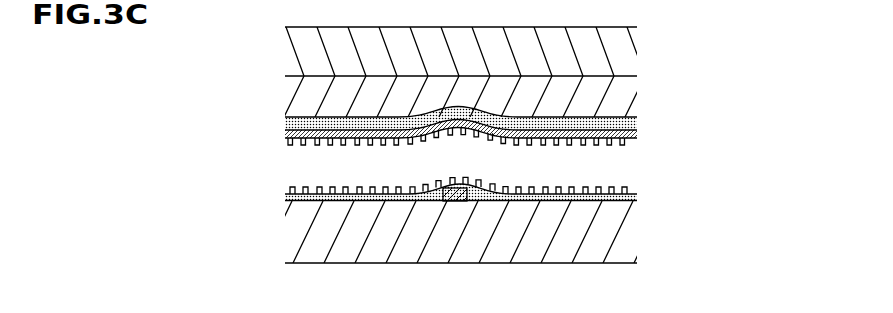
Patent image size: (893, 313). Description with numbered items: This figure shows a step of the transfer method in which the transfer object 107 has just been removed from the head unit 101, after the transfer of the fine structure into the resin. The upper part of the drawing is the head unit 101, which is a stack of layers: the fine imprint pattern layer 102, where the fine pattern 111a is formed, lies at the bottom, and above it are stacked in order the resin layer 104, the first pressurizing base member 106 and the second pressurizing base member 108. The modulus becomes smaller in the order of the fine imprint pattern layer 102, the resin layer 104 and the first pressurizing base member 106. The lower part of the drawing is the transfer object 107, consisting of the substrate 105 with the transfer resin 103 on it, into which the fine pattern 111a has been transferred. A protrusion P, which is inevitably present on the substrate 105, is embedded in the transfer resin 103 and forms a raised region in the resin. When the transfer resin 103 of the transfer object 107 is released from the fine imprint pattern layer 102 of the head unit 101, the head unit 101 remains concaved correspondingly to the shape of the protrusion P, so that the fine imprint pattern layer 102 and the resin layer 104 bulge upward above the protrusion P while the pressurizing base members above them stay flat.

The head unit 101 is at (514, 92).
The fine imprint pattern layer 102 is at (502, 139).
The transfer resin 103 is at (422, 177).
The resin layer 104 is at (636, 121).
The substrate 105 is at (290, 227).
The first pressurizing base member 106 is at (633, 104).
The transfer object 107 is at (407, 208).
The second pressurizing base member 108 is at (636, 56).
The fine pattern 111a is at (554, 188).
The protrusion P is at (480, 176).